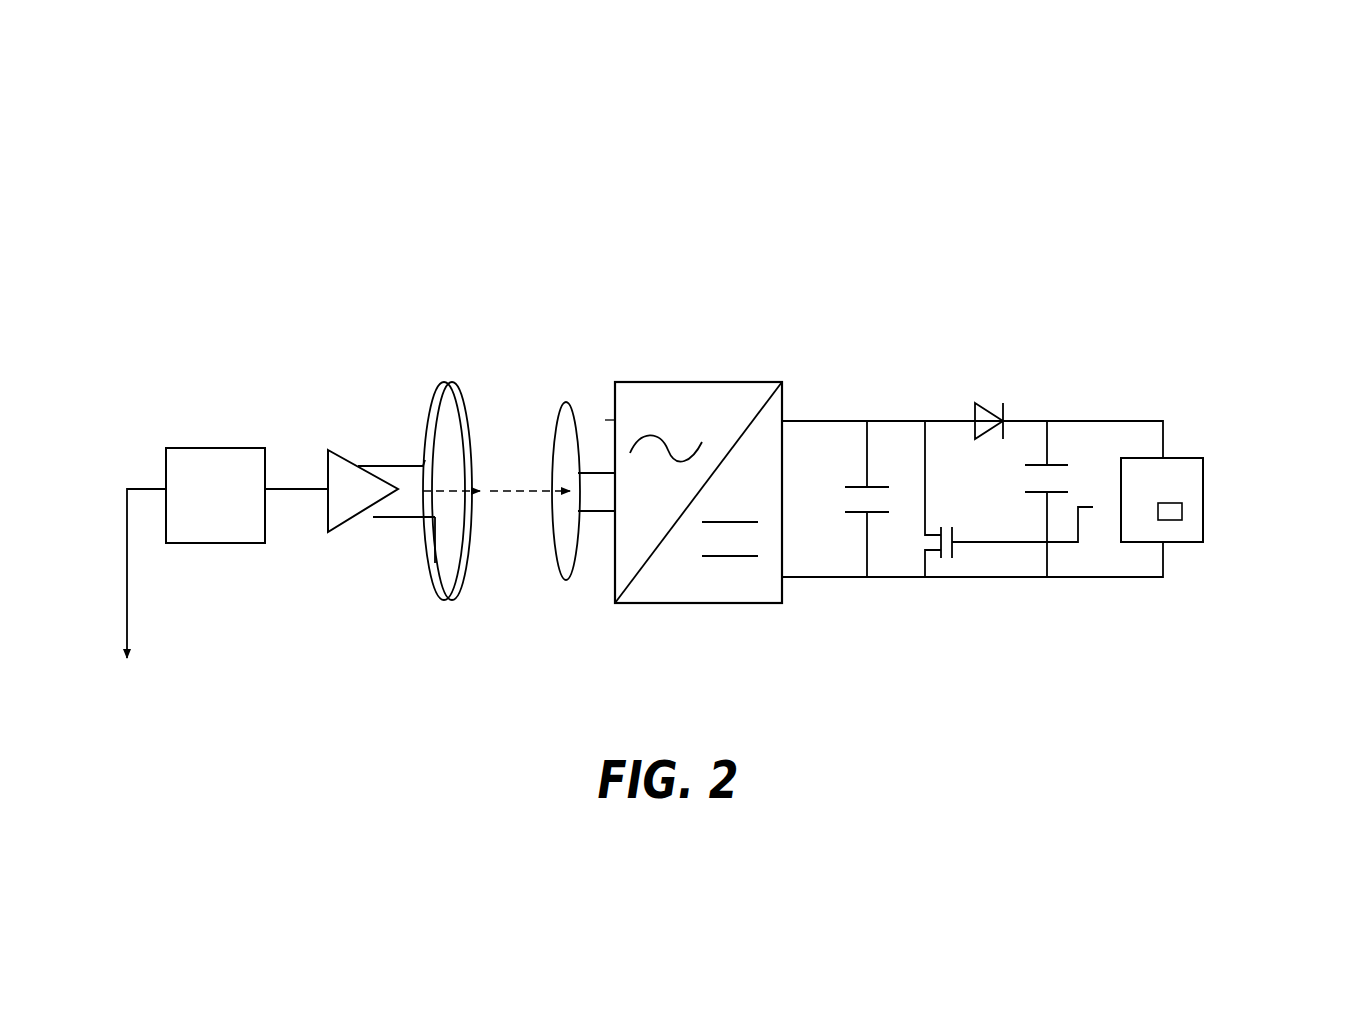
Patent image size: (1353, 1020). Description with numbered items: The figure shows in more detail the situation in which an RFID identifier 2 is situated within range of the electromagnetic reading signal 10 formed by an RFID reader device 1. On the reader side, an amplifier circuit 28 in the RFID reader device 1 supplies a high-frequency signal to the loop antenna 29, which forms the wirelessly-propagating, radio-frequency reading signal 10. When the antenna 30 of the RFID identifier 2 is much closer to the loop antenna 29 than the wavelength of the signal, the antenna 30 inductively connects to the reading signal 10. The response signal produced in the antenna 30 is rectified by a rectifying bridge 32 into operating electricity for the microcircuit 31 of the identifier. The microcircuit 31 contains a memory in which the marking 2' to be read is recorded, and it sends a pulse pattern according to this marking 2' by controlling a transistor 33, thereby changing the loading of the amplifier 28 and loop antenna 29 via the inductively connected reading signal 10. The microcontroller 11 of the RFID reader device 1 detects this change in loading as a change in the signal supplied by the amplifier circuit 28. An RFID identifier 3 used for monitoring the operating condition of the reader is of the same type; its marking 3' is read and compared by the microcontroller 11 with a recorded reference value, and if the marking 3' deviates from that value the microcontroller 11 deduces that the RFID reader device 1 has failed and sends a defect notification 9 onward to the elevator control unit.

The RFID reader device 1 is at (318, 147).
The RFID identifier 2 is at (874, 438).
The RFID identifier 3 is at (874, 491).
The defect notification 9 is at (128, 597).
The reading signal 10 is at (515, 490).
The microcontroller 11 is at (215, 448).
The amplifier circuit 28 is at (345, 459).
The loop antenna 29 is at (447, 383).
The antenna 30 is at (568, 580).
The microcircuit 31 is at (1186, 458).
The rectifying bridge 32 is at (710, 382).
The transistor 33 is at (928, 541).
The marking 2' is at (1205, 567).
The marking 3' is at (1170, 511).